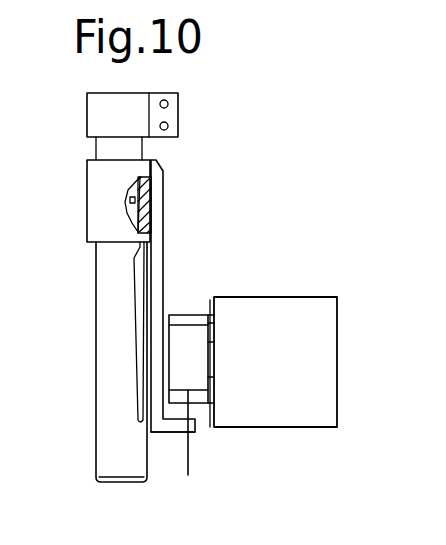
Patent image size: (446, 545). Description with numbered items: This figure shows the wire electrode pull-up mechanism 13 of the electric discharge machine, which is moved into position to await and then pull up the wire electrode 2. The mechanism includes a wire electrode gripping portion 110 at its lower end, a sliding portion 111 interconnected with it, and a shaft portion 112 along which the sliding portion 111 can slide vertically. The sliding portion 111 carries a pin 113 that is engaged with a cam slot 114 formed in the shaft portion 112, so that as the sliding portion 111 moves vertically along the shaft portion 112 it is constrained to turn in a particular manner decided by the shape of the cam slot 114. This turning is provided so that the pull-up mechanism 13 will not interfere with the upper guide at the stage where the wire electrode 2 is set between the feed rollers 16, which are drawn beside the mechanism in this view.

The wire electrode 2 is at (190, 452).
The wire electrode pull-up mechanism 13 is at (192, 266).
The feed roller mechanism 16 is at (196, 380).
The wire electrode gripping portion 110 is at (172, 433).
The sliding portion 111 is at (101, 202).
The shaft portion 112 is at (100, 385).
The pin 113 is at (150, 202).
The cam slot 114 is at (133, 292).